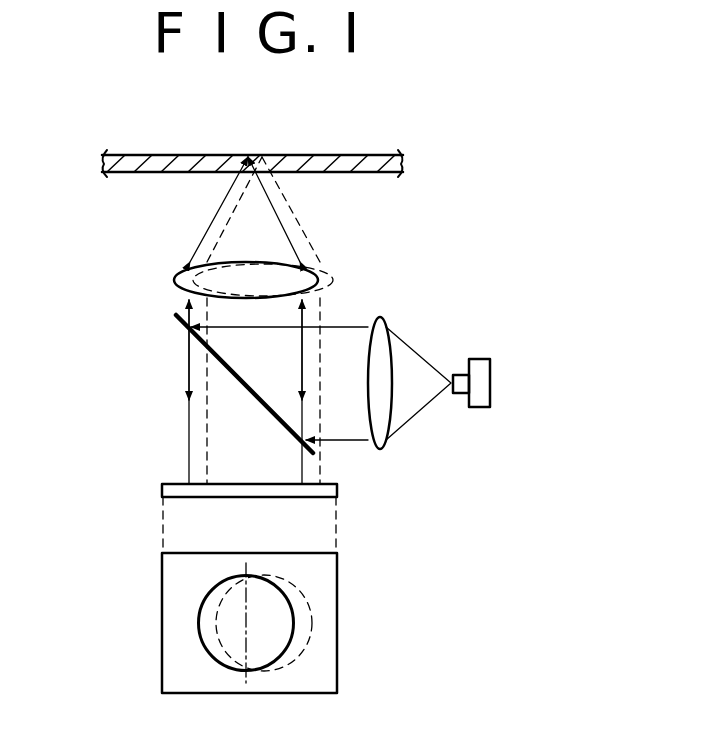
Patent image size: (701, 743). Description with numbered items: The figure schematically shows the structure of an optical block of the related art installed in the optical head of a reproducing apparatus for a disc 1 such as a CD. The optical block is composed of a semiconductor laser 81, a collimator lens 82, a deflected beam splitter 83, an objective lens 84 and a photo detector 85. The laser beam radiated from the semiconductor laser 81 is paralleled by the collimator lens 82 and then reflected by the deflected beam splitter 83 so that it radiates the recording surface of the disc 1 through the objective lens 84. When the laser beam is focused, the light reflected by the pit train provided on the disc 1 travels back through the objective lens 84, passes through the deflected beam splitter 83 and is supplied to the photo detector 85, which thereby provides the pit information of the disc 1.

The disc 1 is at (308, 153).
The semiconductor laser 81 is at (481, 383).
The collimator lens 82 is at (380, 318).
The deflected beam splitter 83 is at (220, 362).
The objective lens 84 is at (176, 282).
The photo detector 85 is at (131, 485).